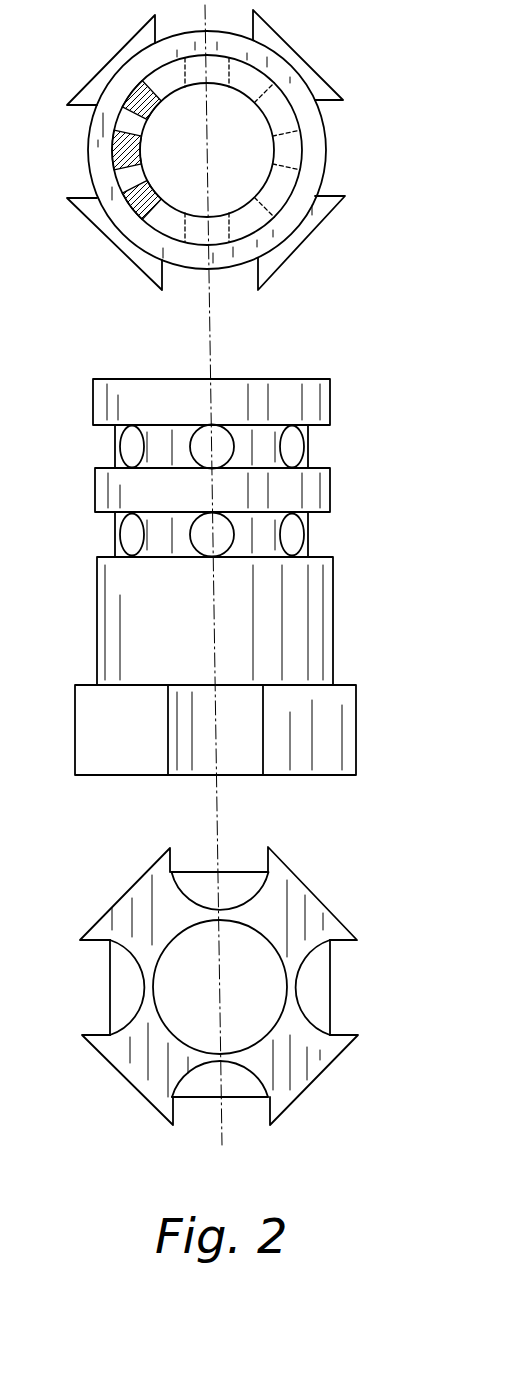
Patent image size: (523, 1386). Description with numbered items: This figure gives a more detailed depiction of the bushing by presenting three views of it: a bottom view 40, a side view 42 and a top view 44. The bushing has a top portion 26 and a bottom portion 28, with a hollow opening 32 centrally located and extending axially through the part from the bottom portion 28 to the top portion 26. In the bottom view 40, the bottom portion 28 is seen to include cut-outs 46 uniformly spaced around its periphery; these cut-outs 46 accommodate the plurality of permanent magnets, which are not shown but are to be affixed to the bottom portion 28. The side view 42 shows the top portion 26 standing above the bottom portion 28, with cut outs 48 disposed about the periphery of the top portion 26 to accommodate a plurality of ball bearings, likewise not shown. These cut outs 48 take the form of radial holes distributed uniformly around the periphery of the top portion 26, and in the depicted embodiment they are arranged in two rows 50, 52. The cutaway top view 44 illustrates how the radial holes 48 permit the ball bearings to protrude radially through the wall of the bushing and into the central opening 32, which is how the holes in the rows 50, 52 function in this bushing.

The top portion 26 is at (97, 648).
The bottom portion 28 is at (108, 777).
The hollow opening 32 is at (238, 212).
The bottom view 40 is at (390, 930).
The side view 42 is at (375, 622).
The top view 44 is at (368, 72).
The cut-outs 46 is at (203, 738).
The cut outs 48 is at (225, 445).
The row 50 is at (90, 450).
The row 52 is at (82, 538).